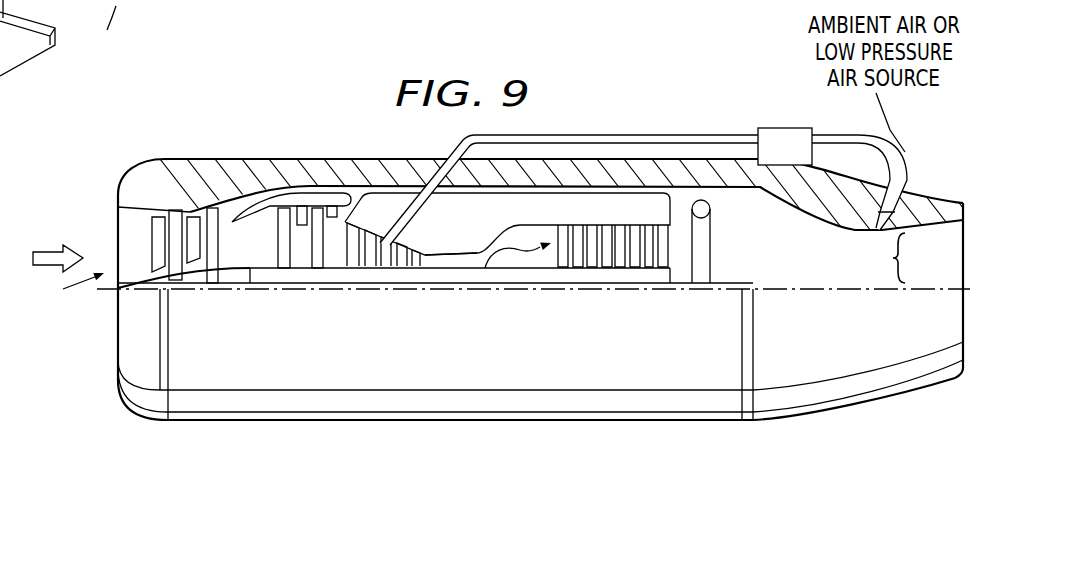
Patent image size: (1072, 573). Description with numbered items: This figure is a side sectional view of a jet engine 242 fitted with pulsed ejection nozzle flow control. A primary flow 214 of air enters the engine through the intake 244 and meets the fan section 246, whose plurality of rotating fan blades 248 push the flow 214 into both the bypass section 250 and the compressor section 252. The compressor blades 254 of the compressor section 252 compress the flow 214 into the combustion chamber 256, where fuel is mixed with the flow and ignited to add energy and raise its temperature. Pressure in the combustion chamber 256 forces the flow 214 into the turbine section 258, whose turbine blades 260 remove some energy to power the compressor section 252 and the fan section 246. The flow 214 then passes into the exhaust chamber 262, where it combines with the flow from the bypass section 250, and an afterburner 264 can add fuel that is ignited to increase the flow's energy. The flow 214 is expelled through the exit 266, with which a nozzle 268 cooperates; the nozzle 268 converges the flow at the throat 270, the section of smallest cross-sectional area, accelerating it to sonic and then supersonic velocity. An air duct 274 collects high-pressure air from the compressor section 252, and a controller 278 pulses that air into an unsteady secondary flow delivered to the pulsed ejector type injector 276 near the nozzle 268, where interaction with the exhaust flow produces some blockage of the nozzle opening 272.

The primary flow 214 is at (47, 250).
The jet engine 242 is at (226, 145).
The intake 244 is at (63, 290).
The fan section 246 is at (140, 231).
The fan blades 248 is at (212, 277).
The bypass section 250 is at (303, 190).
The compressor section 252 is at (263, 243).
The compressor blades 254 is at (420, 260).
The combustion chamber 256 is at (465, 263).
The turbine section 258 is at (530, 248).
The turbine blades 260 is at (563, 260).
The exhaust chamber 262 is at (792, 230).
The afterburner 264 is at (712, 257).
The exit 266 is at (988, 274).
The nozzle 268 is at (937, 183).
The throat 270 is at (942, 237).
The nozzle opening 272 is at (921, 258).
The air duct 274 is at (626, 135).
The pulsed ejector type injector 276 is at (877, 230).
The controller 278 is at (780, 128).